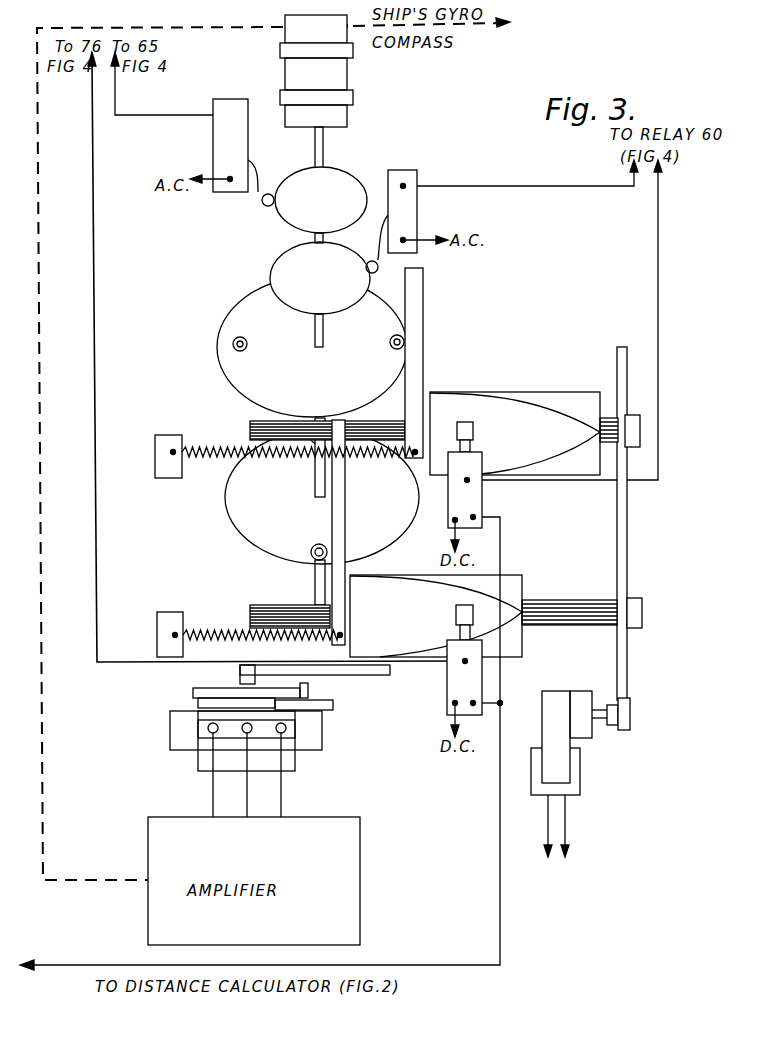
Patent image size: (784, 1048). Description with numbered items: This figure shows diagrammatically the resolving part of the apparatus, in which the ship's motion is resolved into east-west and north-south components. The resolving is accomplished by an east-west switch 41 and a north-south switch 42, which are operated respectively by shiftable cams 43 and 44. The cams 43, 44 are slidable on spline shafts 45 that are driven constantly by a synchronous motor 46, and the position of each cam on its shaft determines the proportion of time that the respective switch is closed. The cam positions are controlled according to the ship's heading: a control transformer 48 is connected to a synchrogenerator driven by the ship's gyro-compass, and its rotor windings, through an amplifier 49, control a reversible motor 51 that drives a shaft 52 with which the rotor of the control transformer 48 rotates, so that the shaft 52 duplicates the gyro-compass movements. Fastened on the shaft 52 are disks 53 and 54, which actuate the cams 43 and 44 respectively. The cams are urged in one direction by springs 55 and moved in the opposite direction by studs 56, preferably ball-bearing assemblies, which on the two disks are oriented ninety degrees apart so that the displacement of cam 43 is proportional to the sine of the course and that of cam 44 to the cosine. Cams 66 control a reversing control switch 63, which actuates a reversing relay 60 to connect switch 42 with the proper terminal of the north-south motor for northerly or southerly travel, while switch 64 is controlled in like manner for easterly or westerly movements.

The east-west switch 41 is at (455, 688).
The north-south switch 42 is at (470, 503).
The shiftable cam 43 is at (518, 590).
The shiftable cam 44 is at (553, 405).
The spline shafts 45 is at (390, 425).
The synchronous motor 46 is at (565, 770).
The control transformer 48 is at (345, 78).
The amplifier 49 is at (335, 853).
The reversible motor 51 is at (297, 762).
The shaft 52 is at (325, 150).
The disk 53 is at (385, 522).
The disk 54 is at (385, 312).
The springs 55 is at (215, 462).
The studs 56 is at (247, 350).
The reversing relay 60 is at (561, 842).
The reversing control switch 63 is at (413, 177).
The switch 64 is at (213, 143).
The cams 66 is at (285, 218).